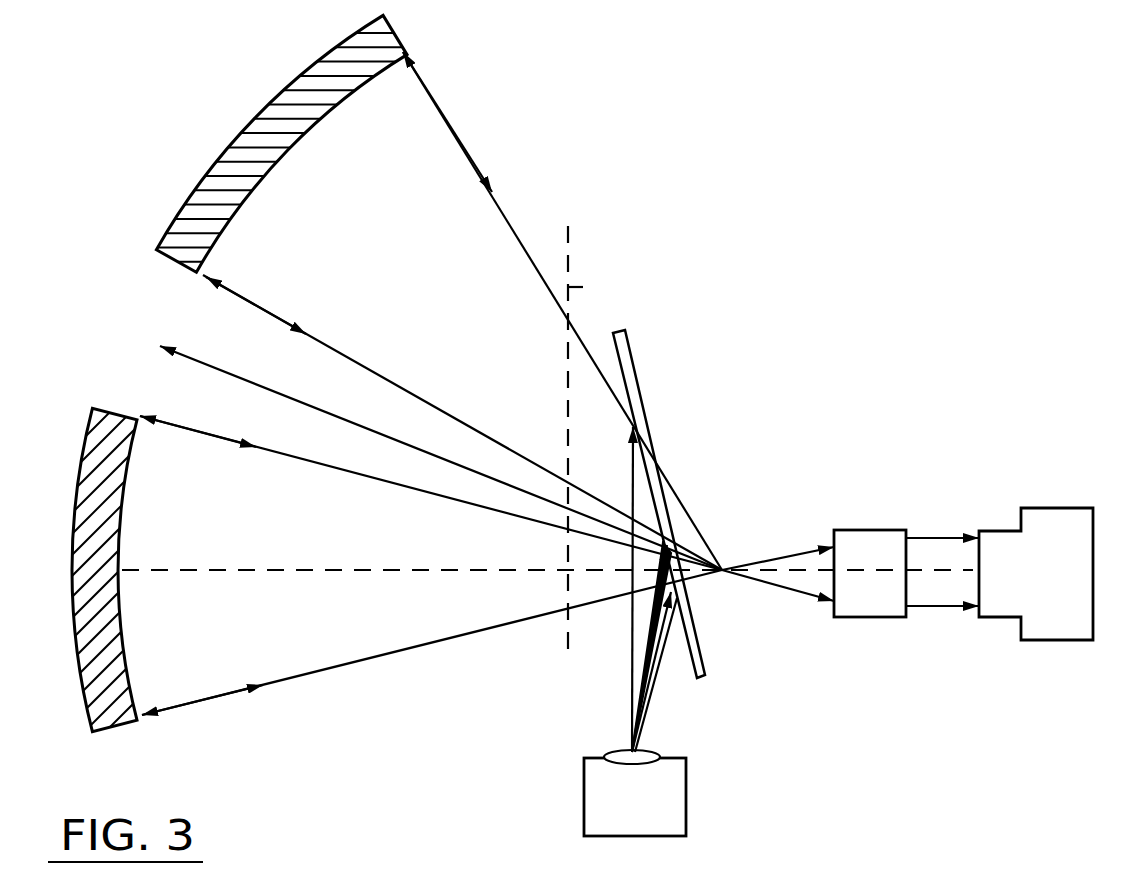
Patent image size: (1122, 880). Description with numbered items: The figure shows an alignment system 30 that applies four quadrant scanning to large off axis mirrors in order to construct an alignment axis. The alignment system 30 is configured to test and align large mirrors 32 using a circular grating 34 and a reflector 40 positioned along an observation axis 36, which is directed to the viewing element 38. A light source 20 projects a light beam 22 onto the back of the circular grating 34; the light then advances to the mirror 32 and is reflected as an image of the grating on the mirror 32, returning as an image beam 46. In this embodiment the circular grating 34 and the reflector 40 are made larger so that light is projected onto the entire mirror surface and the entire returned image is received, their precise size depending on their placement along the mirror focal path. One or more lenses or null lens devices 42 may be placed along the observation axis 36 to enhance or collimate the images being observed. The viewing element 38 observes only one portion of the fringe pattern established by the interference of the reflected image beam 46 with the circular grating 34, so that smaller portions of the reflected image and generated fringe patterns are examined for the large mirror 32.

The light source 20 is at (635, 689).
The light beam 22 is at (155, 707).
The alignment system 30 is at (727, 343).
The mirror 32 is at (232, 143).
The circular grating 34 is at (597, 281).
The observation axis 36 is at (291, 566).
The viewing element 38 is at (1036, 574).
The reflector 40 is at (704, 660).
The null lens device 42 is at (906, 573).
The image beam 46 is at (257, 452).